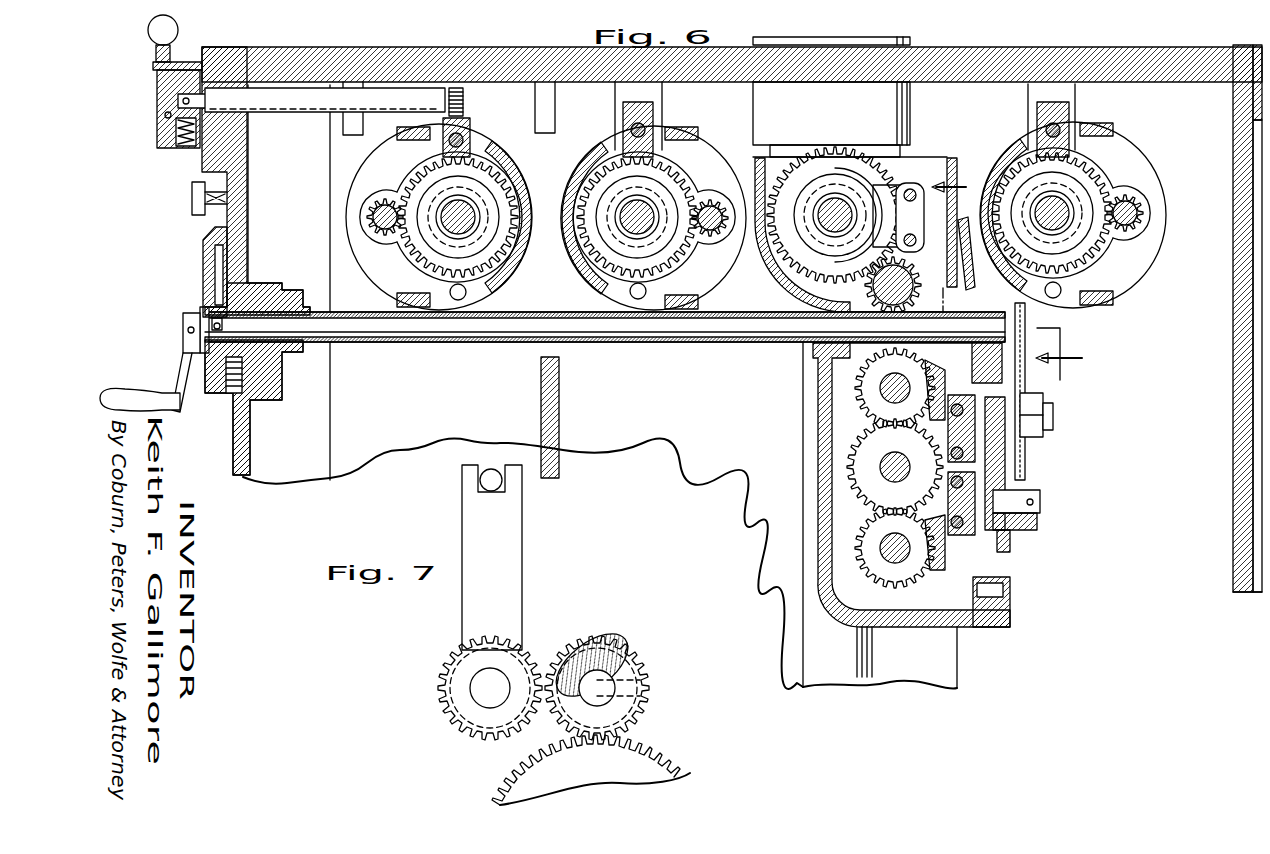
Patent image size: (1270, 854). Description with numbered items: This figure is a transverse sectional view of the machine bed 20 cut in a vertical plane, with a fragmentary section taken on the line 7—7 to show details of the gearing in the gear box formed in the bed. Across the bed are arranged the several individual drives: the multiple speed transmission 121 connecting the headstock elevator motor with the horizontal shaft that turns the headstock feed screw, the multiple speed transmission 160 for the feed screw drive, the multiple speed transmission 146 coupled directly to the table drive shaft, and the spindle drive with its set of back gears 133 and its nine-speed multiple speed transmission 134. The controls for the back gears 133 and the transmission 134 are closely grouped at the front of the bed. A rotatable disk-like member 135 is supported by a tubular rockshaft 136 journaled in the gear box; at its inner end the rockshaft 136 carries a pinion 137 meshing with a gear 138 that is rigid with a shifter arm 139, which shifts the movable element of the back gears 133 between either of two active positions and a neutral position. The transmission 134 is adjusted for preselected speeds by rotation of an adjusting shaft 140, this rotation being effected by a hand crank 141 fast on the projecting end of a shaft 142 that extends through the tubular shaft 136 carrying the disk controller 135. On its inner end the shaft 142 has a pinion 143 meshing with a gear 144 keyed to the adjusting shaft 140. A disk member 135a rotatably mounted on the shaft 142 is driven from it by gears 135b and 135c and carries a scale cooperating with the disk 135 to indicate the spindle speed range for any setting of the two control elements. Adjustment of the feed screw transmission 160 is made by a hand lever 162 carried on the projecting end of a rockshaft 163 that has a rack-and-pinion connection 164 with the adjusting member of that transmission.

In FIG. 6, the bed 20 is at (1246, 591).
In FIG. 6, the multiple speed transmission 121 is at (712, 146).
In FIG. 6, the back gears 133 is at (928, 152).
In FIG. 6, the multiple speed transmission 134 is at (816, 440).
In FIG. 6, the rotatable disk-like member 135 is at (205, 224).
In FIG. 6, the disk member 135a is at (203, 260).
In FIG. 6, the gear 135b is at (214, 312).
In FIG. 6, the gear 135c is at (212, 392).
In FIG. 6, the tubular rockshaft 136 is at (663, 342).
In FIG. 7, the tubular rockshaft 136 is at (626, 641).
In FIG. 6, the pinion 137 is at (952, 303).
In FIG. 7, the pinion 137 is at (578, 645).
In FIG. 7, the gear 138 is at (442, 684).
In FIG. 6, the shifter arm 139 is at (916, 217).
In FIG. 7, the shifter arm 139 is at (524, 528).
In FIG. 6, the adjusting shaft 140 is at (1052, 420).
In FIG. 6, the hand crank 141 is at (183, 370).
In FIG. 6, the shaft 142 is at (437, 330).
In FIG. 7, the shaft 142 is at (608, 698).
In FIG. 6, the pinion 143 is at (1023, 318).
In FIG. 7, the pinion 143 is at (641, 717).
In FIG. 6, the gear 144 is at (1026, 452).
In FIG. 7, the gear 144 is at (673, 754).
In FIG. 6, the multiple speed transmission 146 is at (1141, 142).
In FIG. 6, the multiple speed transmission 160 is at (514, 160).
In FIG. 6, the hand lever 162 is at (160, 83).
In FIG. 6, the rockshaft 163 is at (322, 113).
In FIG. 6, the rack-and-pinion connection 164 is at (476, 106).
In FIG. 6, the section line 7- 7 is at (1007, 283).